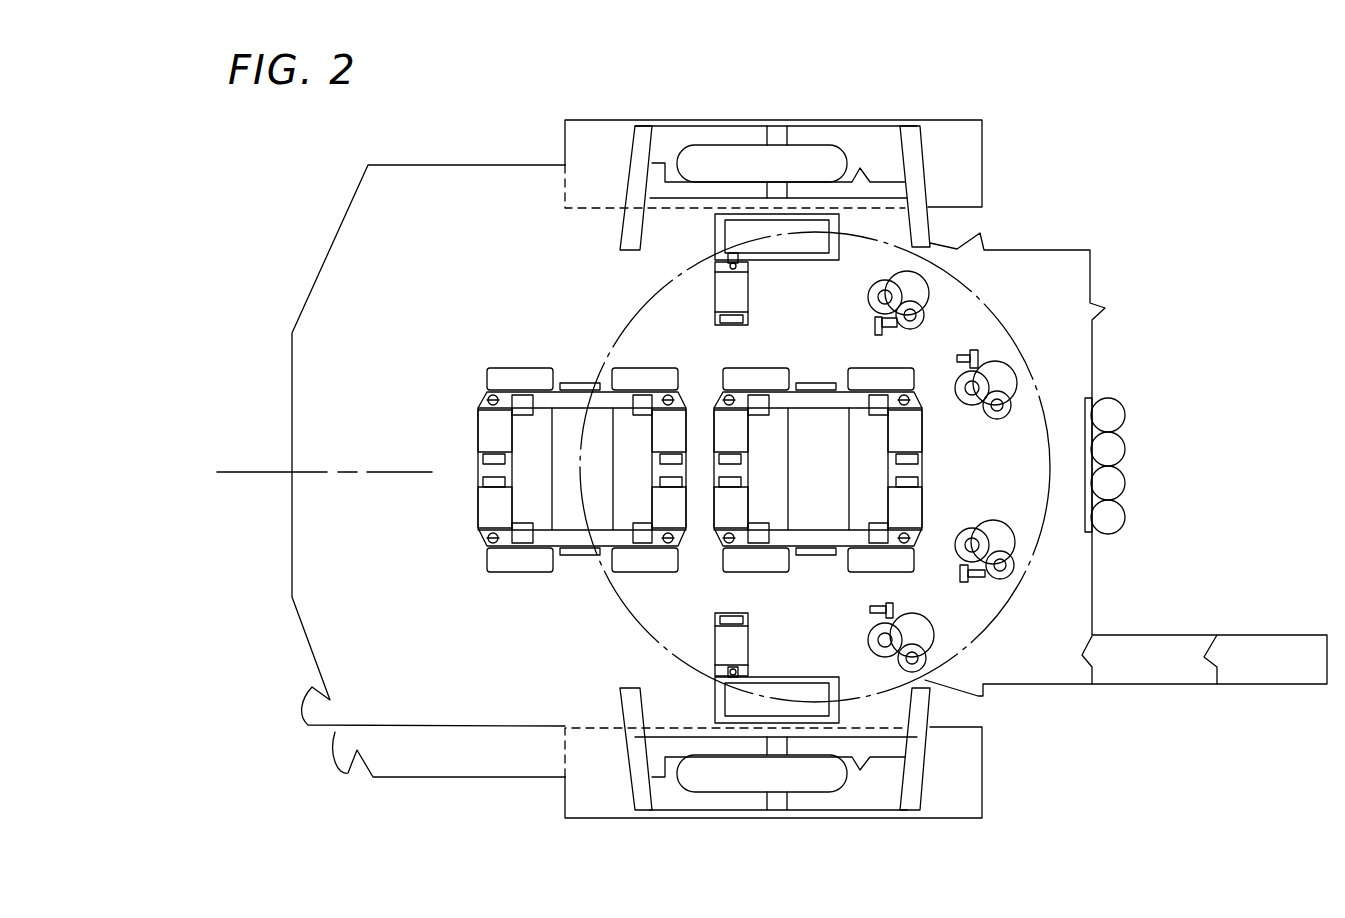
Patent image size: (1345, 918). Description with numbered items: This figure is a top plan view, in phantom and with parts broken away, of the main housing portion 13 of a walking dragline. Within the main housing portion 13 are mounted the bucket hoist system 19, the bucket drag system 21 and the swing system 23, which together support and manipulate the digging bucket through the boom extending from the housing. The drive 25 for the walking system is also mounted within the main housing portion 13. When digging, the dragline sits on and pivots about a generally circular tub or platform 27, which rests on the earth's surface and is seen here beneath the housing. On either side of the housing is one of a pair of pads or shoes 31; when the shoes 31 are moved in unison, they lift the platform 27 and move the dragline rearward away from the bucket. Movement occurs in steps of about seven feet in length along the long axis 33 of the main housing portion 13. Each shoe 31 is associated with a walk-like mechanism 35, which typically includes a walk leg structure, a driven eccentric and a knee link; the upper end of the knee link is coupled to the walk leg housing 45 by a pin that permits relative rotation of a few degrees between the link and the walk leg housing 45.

The main housing portion 13 is at (424, 173).
The bucket hoist system 19 is at (887, 367).
The bucket drag system 21 is at (530, 366).
The swing system 23 is at (930, 288).
The drive for the walking system 25 is at (750, 308).
The platform 27 is at (1013, 327).
The shoes 31 is at (982, 143).
The long axis 33 is at (305, 472).
The walk-like mechanism 35 is at (827, 800).
The walk leg housing 45 is at (713, 780).